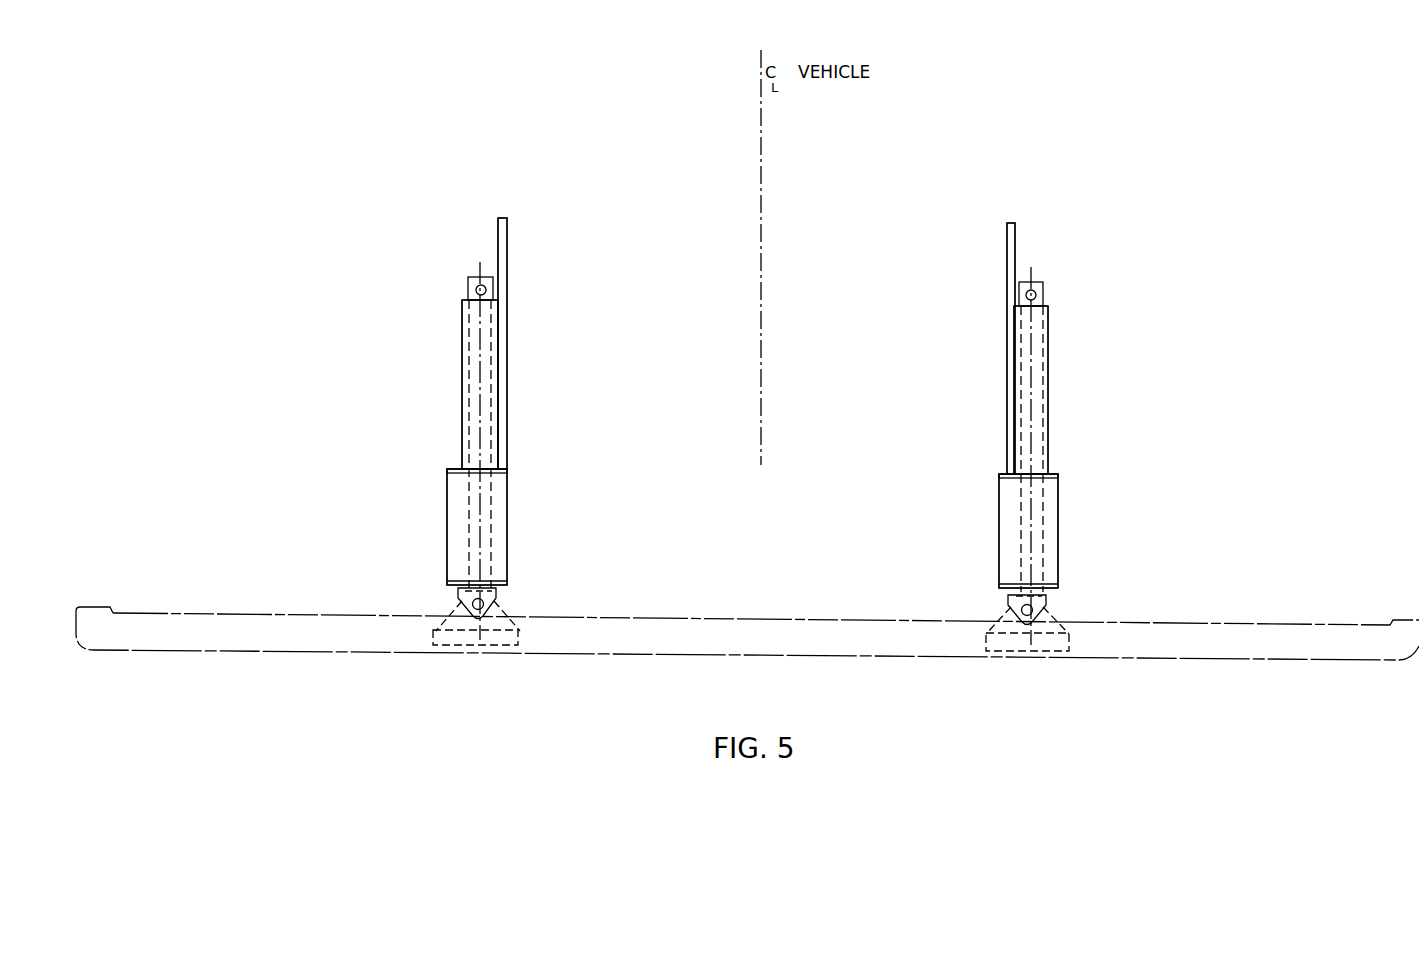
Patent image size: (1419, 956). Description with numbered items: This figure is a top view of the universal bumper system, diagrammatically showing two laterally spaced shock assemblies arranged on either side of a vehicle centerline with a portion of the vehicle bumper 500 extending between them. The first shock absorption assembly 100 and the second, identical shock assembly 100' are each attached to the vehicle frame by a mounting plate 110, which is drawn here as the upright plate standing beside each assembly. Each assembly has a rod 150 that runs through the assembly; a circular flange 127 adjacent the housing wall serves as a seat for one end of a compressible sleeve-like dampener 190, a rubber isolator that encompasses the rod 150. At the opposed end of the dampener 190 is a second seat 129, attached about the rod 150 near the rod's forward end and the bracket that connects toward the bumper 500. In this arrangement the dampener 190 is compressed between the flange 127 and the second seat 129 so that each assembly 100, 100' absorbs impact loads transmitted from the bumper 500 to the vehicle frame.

The shock absorption assembly 100 is at (535, 365).
The second shock assembly 100' is at (1071, 360).
The mounting plate 110 is at (507, 258).
The rod 150 is at (468, 282).
The circular flange 127 is at (506, 468).
The compressible sleeve-like dampener 190 is at (508, 527).
The second seat 129 is at (507, 585).
The vehicle bumper 500 is at (1210, 633).